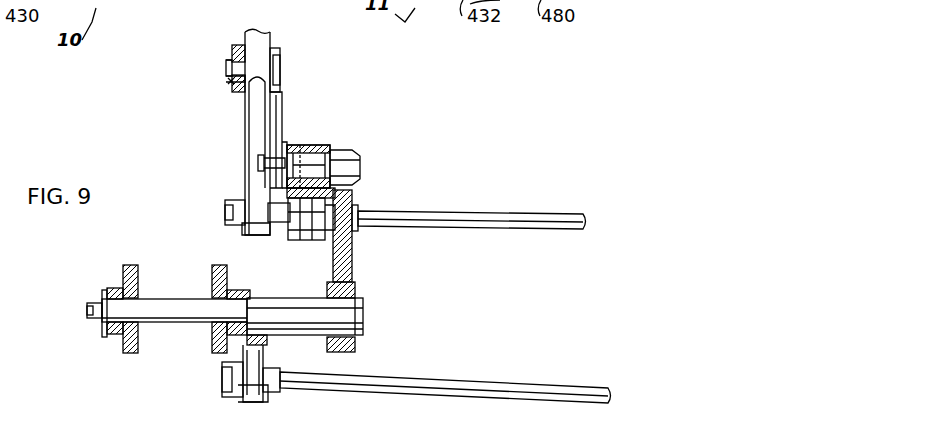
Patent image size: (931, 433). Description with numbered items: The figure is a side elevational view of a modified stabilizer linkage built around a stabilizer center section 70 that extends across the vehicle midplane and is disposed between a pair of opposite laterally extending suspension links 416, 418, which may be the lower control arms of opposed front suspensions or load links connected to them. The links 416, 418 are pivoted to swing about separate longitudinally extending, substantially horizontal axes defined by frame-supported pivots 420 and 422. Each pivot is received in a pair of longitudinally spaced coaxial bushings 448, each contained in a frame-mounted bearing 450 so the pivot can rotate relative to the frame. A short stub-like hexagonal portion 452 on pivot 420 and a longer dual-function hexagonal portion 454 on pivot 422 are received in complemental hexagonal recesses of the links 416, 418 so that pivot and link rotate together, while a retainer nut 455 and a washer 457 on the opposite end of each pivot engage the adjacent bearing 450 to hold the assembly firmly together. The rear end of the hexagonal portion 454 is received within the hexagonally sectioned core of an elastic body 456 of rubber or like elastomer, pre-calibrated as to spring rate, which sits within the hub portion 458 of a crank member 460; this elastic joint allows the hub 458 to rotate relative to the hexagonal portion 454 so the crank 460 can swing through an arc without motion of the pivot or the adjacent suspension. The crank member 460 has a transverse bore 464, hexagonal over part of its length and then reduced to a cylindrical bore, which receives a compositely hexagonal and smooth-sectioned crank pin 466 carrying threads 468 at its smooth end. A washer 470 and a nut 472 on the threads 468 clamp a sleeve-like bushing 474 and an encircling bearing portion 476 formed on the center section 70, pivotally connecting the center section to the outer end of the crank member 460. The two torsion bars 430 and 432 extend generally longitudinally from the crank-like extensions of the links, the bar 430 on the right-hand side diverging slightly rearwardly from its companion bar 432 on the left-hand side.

The stabilizer center section 70 is at (270, 230).
The suspension link 416 is at (272, 34).
The suspension link 418 is at (267, 345).
The pivot 420 is at (231, 80).
The pivot 422 is at (160, 300).
The torsion bar 430 is at (486, 216).
The torsion bar 432 is at (495, 385).
The bushing 448 is at (232, 52).
The bearing 450 is at (120, 336).
The hexagonal portion 452 is at (280, 58).
The hexagonal portion 454 is at (262, 300).
The retainer nut 455 is at (88, 305).
The elastic body 456 is at (355, 290).
The washer 457 is at (102, 292).
The hub portion 458 is at (355, 347).
The crank member 460 is at (345, 225).
The transverse bore 464 is at (360, 165).
The crank pin 466 is at (320, 160).
The threads 468 is at (258, 162).
The washer 470 is at (278, 150).
The nut 472 is at (284, 140).
The sleeve-like bushing 474 is at (306, 223).
The bearing portion 476 is at (314, 145).